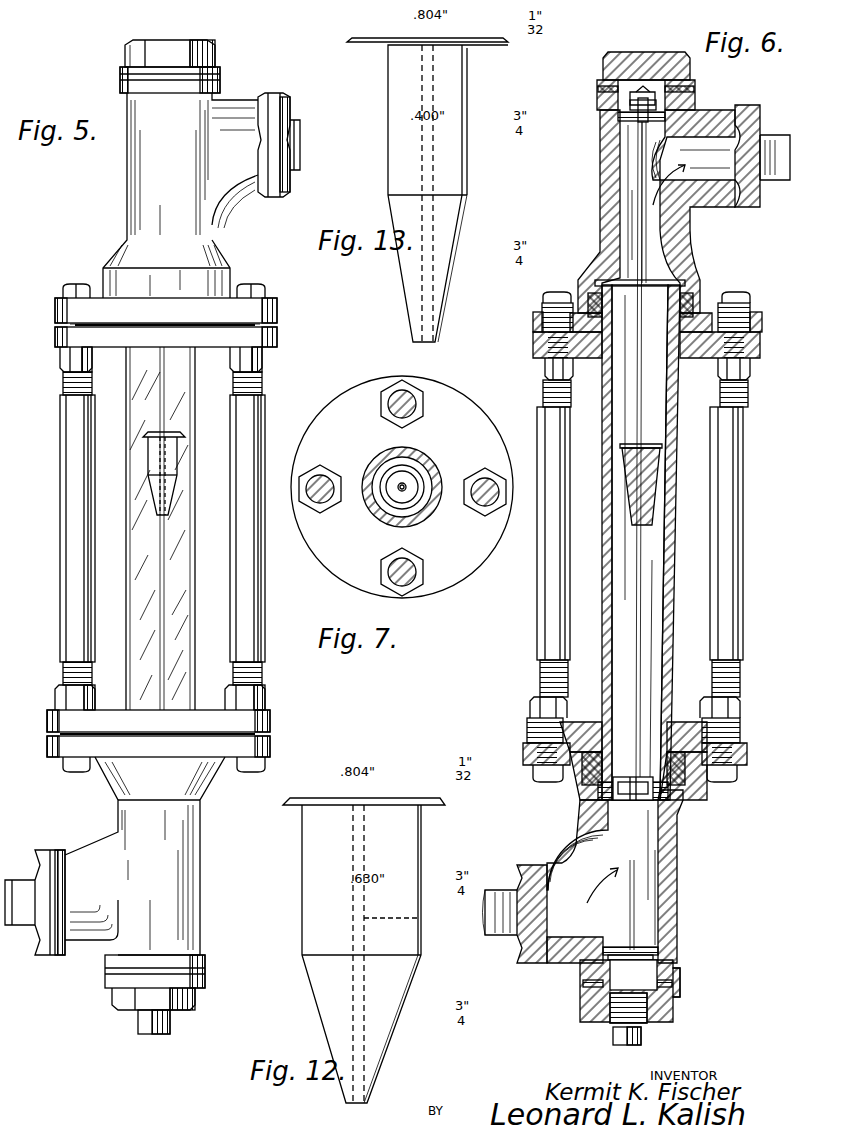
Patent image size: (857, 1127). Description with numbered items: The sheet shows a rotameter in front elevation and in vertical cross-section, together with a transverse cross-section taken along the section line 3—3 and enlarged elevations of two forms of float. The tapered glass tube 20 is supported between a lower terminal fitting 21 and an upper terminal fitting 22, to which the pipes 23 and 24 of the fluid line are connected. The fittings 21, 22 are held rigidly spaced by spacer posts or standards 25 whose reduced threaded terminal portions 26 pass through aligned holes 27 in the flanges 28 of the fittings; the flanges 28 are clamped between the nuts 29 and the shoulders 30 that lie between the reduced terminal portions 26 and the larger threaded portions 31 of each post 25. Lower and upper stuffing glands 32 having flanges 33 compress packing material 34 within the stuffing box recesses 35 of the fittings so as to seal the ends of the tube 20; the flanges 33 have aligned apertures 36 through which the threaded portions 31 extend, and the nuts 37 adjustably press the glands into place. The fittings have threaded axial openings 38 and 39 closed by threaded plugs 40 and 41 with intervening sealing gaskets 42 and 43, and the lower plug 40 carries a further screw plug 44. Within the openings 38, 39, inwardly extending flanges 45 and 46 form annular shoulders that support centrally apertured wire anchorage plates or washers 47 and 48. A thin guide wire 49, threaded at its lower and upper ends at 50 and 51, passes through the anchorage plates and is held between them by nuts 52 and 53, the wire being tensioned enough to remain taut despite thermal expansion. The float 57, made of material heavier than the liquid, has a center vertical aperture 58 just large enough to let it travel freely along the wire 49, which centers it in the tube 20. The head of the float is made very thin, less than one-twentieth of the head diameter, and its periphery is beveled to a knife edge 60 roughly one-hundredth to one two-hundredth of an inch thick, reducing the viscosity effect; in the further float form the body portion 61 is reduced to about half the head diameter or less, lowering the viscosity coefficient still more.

In FIG. 6, the section line 3— 3 is at (550, 428).
In FIG. 5, the tapered glass tube 20 is at (196, 528).
In FIG. 7, the tapered glass tube 20 is at (430, 470).
In FIG. 6, the tapered glass tube 20 is at (670, 535).
In FIG. 5, the lower terminal fitting 21 is at (145, 856).
In FIG. 6, the lower terminal fitting 21 is at (682, 882).
In FIG. 5, the upper terminal fitting 22 is at (180, 195).
In FIG. 6, the upper terminal fitting 22 is at (600, 232).
In FIG. 5, the pipe 23 is at (22, 880).
In FIG. 6, the pipe 23 is at (500, 905).
In FIG. 5, the pipe 24 is at (285, 130).
In FIG. 6, the pipe 24 is at (770, 145).
In FIG. 5, the spacer post 25 is at (68, 462).
In FIG. 7, the spacer post 25 is at (395, 408).
In FIG. 6, the spacer post 25 is at (735, 494).
In FIG. 5, the reduced threaded terminal portion 26 is at (75, 282).
In FIG. 6, the reduced threaded terminal portion 26 is at (553, 292).
In FIG. 6, the aligned hole 27 is at (762, 318).
In FIG. 5, the flange 28 is at (278, 311).
In FIG. 6, the flange 28 is at (762, 345).
In FIG. 5, the nut 29 is at (62, 762).
In FIG. 6, the nut 29 is at (548, 783).
In FIG. 6, the shoulder 30 is at (527, 740).
In FIG. 5, the large threaded portion 31 is at (233, 380).
In FIG. 6, the large threaded portion 31 is at (545, 332).
In FIG. 6, the stuffing gland 32 is at (592, 335).
In FIG. 5, the gland flange 33 is at (278, 340).
In FIG. 7, the gland flange 33 is at (330, 560).
In FIG. 6, the gland flange 33 is at (752, 362).
In FIG. 6, the packing material 34 is at (690, 290).
In FIG. 6, the recess 35 is at (700, 300).
In FIG. 6, the aligned aperture 36 is at (580, 722).
In FIG. 5, the nut 37 is at (58, 360).
In FIG. 7, the nut 37 is at (320, 512).
In FIG. 6, the nut 37 is at (570, 382).
In FIG. 6, the threaded axial opening 38 is at (682, 980).
In FIG. 6, the threaded axial opening 39 is at (600, 110).
In FIG. 5, the threaded plug 40 is at (195, 1000).
In FIG. 6, the threaded plug 40 is at (682, 998).
In FIG. 5, the threaded plug 41 is at (175, 50).
In FIG. 6, the threaded plug 41 is at (650, 65).
In FIG. 5, the sealing gasket 42 is at (104, 975).
In FIG. 6, the sealing gasket 42 is at (580, 985).
In FIG. 5, the sealing gasket 43 is at (222, 80).
In FIG. 6, the sealing gasket 43 is at (697, 90).
In FIG. 5, the screw plug 44 is at (140, 1025).
In FIG. 6, the screw plug 44 is at (620, 1045).
In FIG. 6, the inwardly extending flange 45 is at (600, 896).
In FIG. 6, the inwardly extending flange 46 is at (634, 202).
In FIG. 6, the wire anchorage plate 47 is at (662, 942).
In FIG. 6, the wire anchorage plate 48 is at (618, 120).
In FIG. 5, the guide wire 49 is at (165, 585).
In FIG. 7, the guide wire 49 is at (398, 492).
In FIG. 6, the guide wire 49 is at (642, 650).
In FIG. 6, the lower threaded end 50 is at (644, 905).
In FIG. 6, the upper threaded end 51 is at (666, 172).
In FIG. 6, the nut 52 is at (655, 945).
In FIG. 6, the nut 53 is at (672, 78).
In FIG. 5, the float 57 is at (178, 462).
In FIG. 7, the float 57 is at (405, 470).
In FIG. 6, the float 57 is at (628, 490).
In FIG. 12, the center vertical aperture 58 is at (406, 925).
In FIG. 6, the center vertical aperture 58 is at (640, 475).
In FIG. 5, the knife edge 60 is at (148, 440).
In FIG. 13, the knife edge 60 is at (347, 46).
In FIG. 12, the knife edge 60 is at (283, 806).
In FIG. 12, the body portion 61 is at (400, 853).